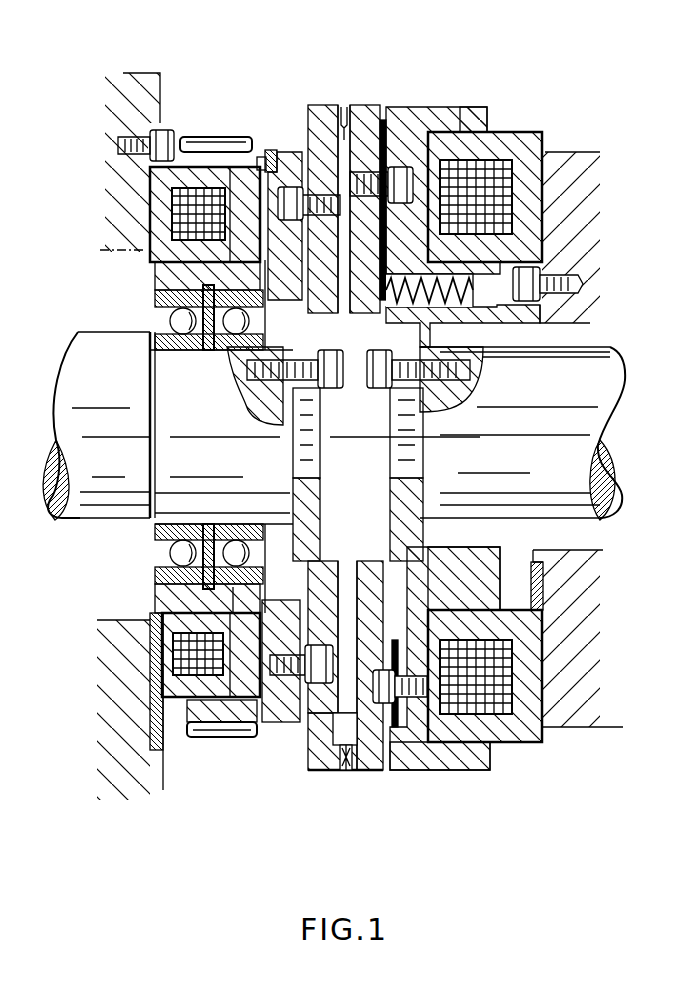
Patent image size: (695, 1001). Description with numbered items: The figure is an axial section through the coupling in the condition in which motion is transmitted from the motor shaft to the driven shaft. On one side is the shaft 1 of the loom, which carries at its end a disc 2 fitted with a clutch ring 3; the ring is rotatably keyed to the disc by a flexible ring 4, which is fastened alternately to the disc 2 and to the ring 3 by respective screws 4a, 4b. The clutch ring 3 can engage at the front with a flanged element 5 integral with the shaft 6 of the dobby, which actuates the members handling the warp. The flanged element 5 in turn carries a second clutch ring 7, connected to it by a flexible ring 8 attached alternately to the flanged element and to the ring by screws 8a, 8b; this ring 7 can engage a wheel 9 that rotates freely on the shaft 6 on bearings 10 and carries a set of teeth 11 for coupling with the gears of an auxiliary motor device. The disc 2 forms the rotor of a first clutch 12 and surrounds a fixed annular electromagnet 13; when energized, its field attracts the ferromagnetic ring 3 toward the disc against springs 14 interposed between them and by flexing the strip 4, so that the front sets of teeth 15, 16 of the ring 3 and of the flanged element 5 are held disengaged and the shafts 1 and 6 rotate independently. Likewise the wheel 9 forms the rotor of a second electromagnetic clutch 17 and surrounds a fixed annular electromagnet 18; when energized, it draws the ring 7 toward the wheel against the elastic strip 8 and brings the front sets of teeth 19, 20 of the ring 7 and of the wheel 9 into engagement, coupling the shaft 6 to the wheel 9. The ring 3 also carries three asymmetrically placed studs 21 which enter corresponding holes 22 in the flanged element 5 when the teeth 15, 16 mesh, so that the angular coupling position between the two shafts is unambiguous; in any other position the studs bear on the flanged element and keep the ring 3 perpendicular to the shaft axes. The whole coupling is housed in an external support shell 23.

The shaft 1 is at (606, 388).
The disc 2 is at (418, 757).
The clutch ring 3 is at (378, 755).
The flexible ring 4 is at (406, 755).
The screws 4a is at (425, 750).
The screws 4b is at (400, 188).
The flanged element 5 is at (335, 755).
The shaft 6 is at (70, 515).
The clutch ring 7 is at (288, 700).
The flexible ring 8 is at (320, 600).
The screws 8a is at (328, 140).
The screws 8b is at (312, 700).
The wheel 9 is at (217, 713).
The bearings 10 is at (168, 572).
The set of teeth 11 is at (228, 137).
The first clutch 12 is at (463, 70).
The electromagnet 13 is at (515, 742).
The springs 14 is at (457, 303).
The front set of teeth 15 is at (346, 108).
The front set of teeth 16 is at (345, 107).
The second electromagnetic clutch 17 is at (216, 70).
The electromagnet 18 is at (185, 652).
The front set of teeth 19 is at (274, 150).
The front set of teeth 20 is at (262, 156).
The studs 21 is at (360, 730).
The holes 22 is at (346, 745).
The external support shell 23 is at (130, 745).